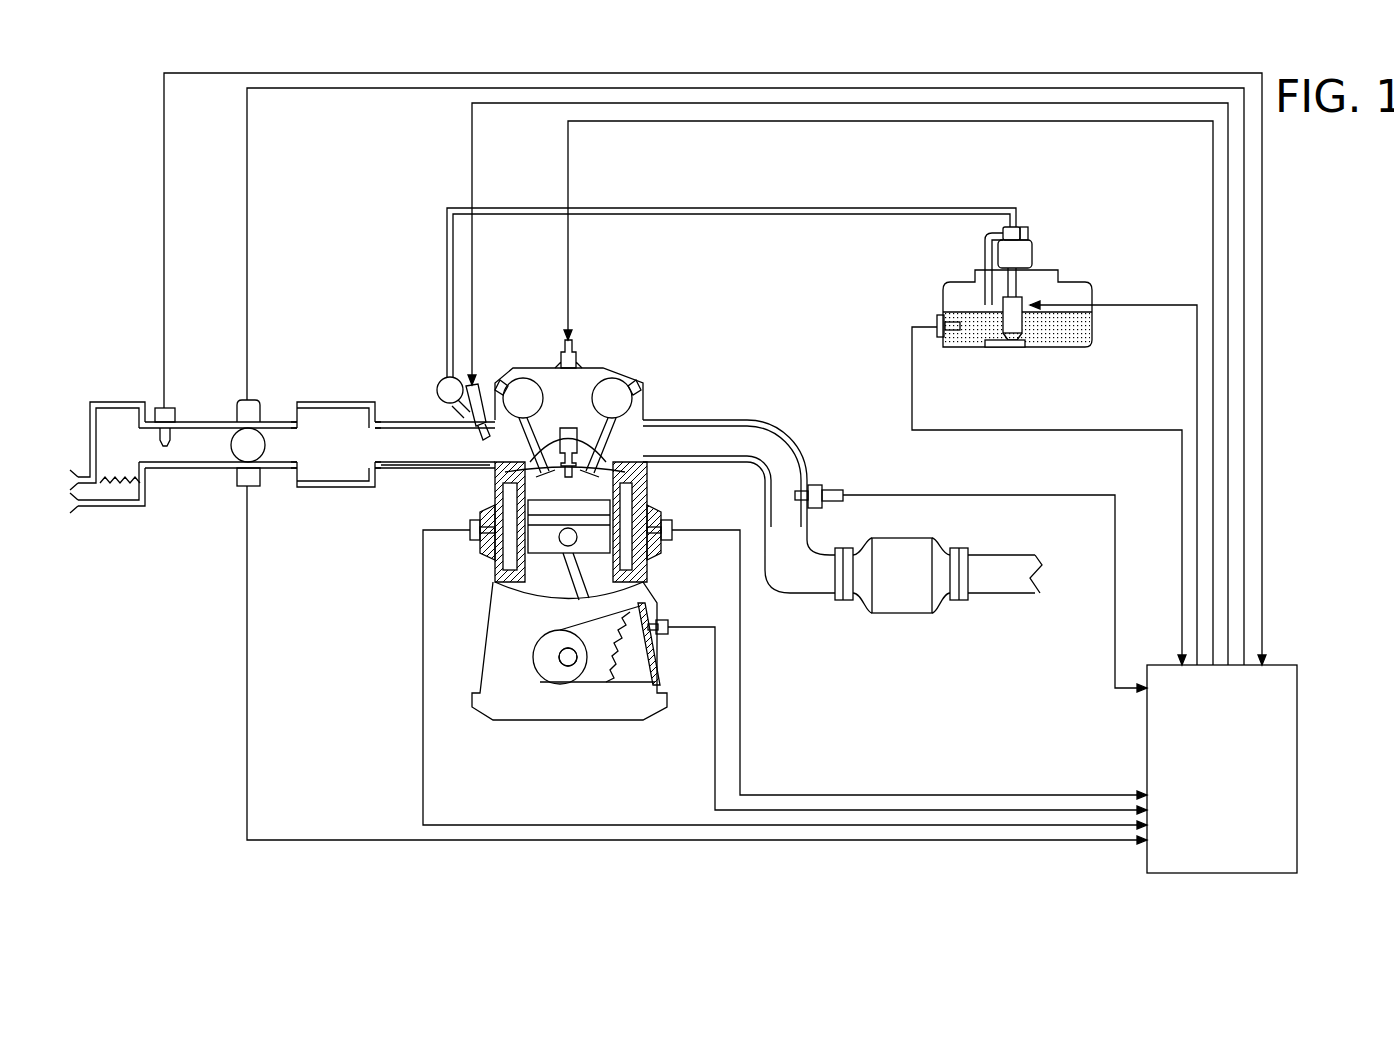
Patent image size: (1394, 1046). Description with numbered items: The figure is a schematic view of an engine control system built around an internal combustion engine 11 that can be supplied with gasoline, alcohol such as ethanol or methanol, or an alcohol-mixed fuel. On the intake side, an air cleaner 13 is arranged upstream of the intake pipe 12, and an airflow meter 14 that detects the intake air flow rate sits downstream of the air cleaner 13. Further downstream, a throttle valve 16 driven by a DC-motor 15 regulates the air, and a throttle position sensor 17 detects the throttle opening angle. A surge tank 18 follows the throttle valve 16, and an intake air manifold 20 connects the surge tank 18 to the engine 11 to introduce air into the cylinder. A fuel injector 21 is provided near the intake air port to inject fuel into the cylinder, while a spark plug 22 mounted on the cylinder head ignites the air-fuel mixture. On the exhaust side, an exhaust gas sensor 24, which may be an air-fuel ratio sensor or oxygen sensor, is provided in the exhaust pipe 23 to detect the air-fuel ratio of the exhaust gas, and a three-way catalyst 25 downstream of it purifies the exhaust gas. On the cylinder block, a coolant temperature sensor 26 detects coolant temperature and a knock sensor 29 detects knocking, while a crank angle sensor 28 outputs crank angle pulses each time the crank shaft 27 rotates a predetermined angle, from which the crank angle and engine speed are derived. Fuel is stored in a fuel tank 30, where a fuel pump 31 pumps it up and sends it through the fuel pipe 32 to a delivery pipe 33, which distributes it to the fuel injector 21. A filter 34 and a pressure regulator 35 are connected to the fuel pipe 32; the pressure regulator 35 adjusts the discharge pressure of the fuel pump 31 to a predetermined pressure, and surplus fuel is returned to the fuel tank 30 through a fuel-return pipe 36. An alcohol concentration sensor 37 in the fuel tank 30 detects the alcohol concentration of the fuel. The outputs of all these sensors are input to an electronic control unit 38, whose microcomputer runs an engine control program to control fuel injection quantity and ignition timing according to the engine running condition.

The internal combustion engine 11 is at (620, 360).
The intake pipe 12 is at (210, 422).
The air cleaner 13 is at (100, 490).
The airflow meter 14 is at (156, 408).
The DC-motor 15 is at (237, 400).
The throttle valve 16 is at (234, 450).
The throttle position sensor 17 is at (258, 487).
The surge tank 18 is at (335, 487).
The intake air manifold 20 is at (408, 468).
The fuel injector 21 is at (492, 380).
The spark plug 22 is at (575, 365).
The exhaust pipe 23 is at (760, 424).
The exhaust gas sensor 24 is at (826, 485).
The three-way catalyst 25 is at (905, 538).
The coolant temperature sensor 26 is at (472, 545).
The crank shaft 27 is at (568, 667).
The crank angle sensor 28 is at (665, 620).
The knock sensor 29 is at (672, 525).
The fuel tank 30 is at (1093, 328).
The fuel pump 31 is at (1015, 333).
The fuel pipe 32 is at (776, 216).
The delivery pipe 33 is at (440, 380).
The filter 34 is at (1033, 255).
The pressure regulator 35 is at (1030, 235).
The fuel-return pipe 36 is at (985, 287).
The alcohol concentration sensor 37 is at (937, 325).
The electronic control unit (ECU) 38 is at (1147, 745).